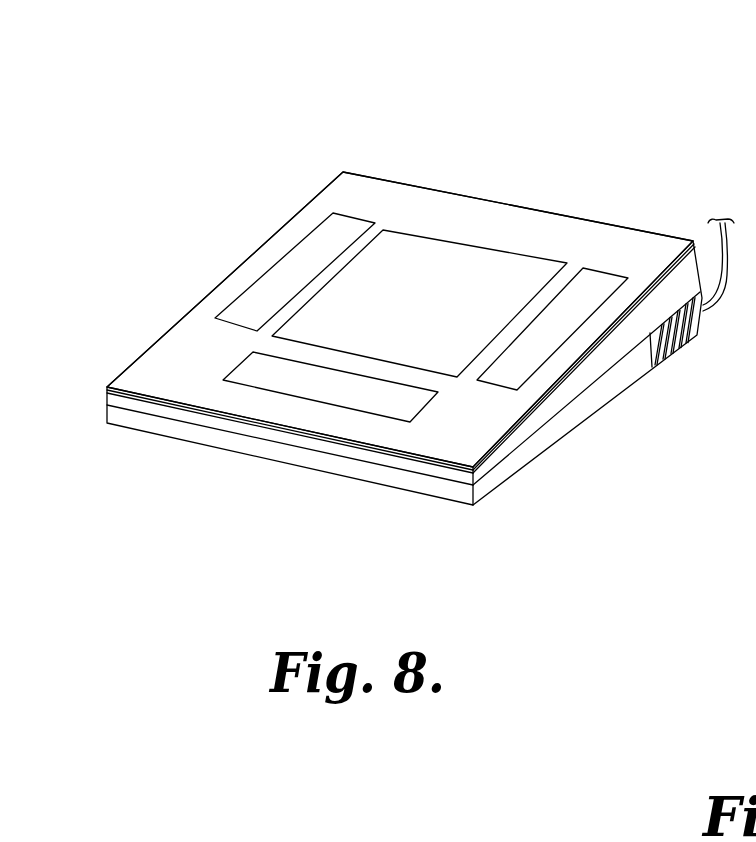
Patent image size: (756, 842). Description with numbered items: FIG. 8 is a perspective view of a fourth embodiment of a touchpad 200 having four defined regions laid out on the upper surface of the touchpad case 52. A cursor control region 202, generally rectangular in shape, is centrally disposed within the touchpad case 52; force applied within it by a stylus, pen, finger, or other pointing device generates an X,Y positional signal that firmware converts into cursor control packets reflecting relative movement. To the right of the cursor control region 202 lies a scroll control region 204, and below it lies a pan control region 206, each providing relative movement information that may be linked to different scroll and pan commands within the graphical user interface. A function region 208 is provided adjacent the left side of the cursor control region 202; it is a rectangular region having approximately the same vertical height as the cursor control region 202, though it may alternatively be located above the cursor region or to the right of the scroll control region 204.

The touchpad 200 is at (313, 120).
The touchpad case 52 is at (458, 208).
The cursor control region 202 is at (545, 274).
The scroll control region 204 is at (602, 288).
The pan control region 206 is at (352, 400).
The function region 208 is at (295, 273).